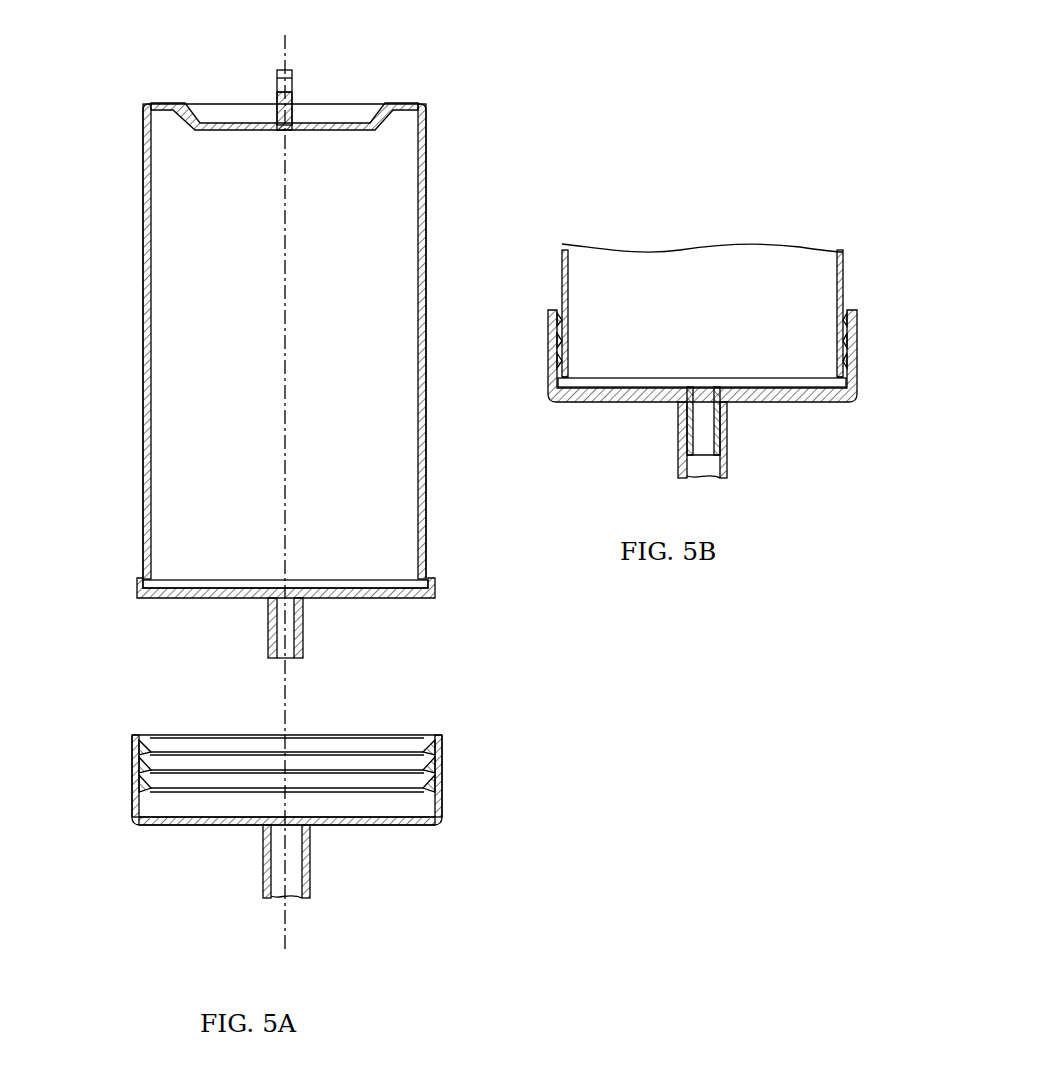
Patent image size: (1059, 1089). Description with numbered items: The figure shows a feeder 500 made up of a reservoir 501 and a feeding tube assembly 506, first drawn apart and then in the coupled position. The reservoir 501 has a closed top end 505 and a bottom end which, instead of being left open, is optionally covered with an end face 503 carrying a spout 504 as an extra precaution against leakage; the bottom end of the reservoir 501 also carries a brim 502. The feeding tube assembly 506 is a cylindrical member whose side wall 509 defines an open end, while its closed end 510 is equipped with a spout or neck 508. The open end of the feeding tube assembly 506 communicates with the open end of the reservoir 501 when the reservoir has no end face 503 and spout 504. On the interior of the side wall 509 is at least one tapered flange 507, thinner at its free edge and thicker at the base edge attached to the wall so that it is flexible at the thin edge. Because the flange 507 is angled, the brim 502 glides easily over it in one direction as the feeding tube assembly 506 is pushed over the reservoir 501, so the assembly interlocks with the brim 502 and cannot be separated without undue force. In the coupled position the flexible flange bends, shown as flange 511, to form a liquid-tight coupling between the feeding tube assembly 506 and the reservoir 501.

In FIG. 5A, the feeder 500 is at (482, 72).
In FIG. 5A, the reservoir 501 is at (425, 222).
In FIG. 5B, the reservoir 501 is at (560, 277).
In FIG. 5A, the brim 502 is at (437, 587).
In FIG. 5A, the end face 503 is at (415, 600).
In FIG. 5A, the spout 504 is at (303, 640).
In FIG. 5B, the spout 504 is at (718, 430).
In FIG. 5A, the closed top end 505 is at (344, 113).
In FIG. 5A, the feeding tube assembly 506 is at (299, 800).
In FIG. 5A, the tapered flange 507 is at (133, 750).
In FIG. 5A, the spout or neck 508 is at (311, 880).
In FIG. 5B, the spout or neck 508 is at (728, 466).
In FIG. 5A, the side wall 509 is at (142, 793).
In FIG. 5B, the side wall 509 is at (860, 348).
In FIG. 5A, the closed end 510 is at (197, 826).
In FIG. 5B, the flange 511 is at (556, 338).